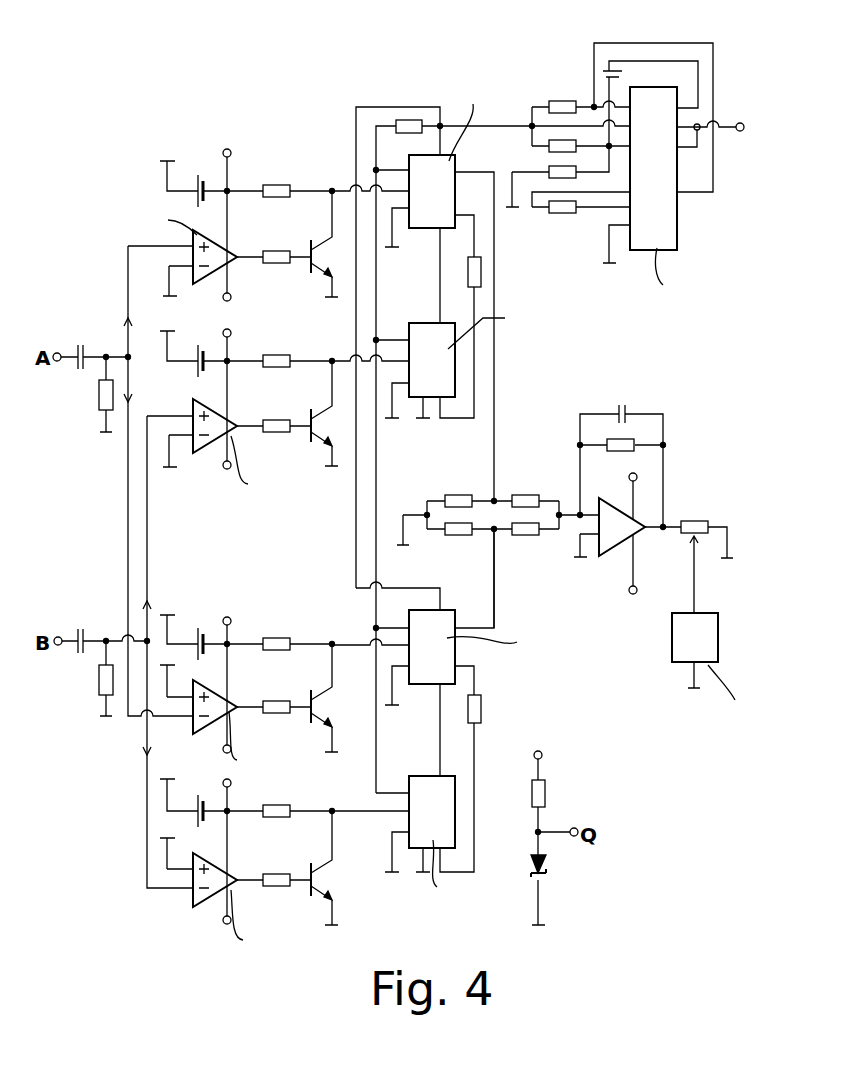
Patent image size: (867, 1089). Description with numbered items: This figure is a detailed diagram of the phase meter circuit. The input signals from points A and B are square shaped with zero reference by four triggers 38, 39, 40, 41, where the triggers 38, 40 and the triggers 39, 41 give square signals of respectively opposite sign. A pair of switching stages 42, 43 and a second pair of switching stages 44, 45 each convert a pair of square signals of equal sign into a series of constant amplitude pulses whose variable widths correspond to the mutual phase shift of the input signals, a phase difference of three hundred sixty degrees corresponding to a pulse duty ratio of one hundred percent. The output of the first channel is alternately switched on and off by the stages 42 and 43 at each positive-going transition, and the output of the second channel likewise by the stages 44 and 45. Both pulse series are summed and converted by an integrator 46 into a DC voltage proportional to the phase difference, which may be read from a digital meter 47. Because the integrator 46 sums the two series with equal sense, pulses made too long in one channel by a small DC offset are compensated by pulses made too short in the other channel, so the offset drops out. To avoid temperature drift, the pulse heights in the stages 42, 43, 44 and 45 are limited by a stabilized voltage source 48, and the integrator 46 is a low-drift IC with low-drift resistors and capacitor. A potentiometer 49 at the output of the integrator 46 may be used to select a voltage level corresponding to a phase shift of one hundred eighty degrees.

The trigger 38 is at (237, 262).
The trigger 39 is at (235, 432).
The trigger 40 is at (236, 712).
The trigger 41 is at (237, 885).
The switching stage 42 is at (443, 215).
The switching stage 43 is at (443, 378).
The switching stage 44 is at (447, 647).
The switching stage 45 is at (447, 828).
The integrator 46 is at (612, 545).
The digital meter 47 is at (680, 641).
The stabilized voltage source 48 is at (664, 232).
The potentiometer 49 is at (693, 527).